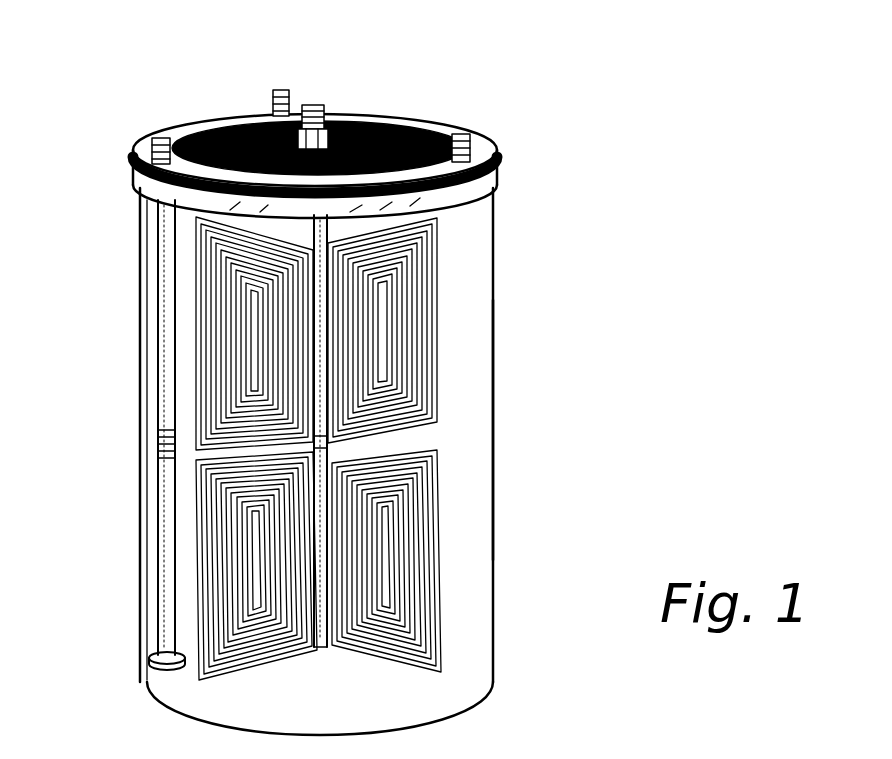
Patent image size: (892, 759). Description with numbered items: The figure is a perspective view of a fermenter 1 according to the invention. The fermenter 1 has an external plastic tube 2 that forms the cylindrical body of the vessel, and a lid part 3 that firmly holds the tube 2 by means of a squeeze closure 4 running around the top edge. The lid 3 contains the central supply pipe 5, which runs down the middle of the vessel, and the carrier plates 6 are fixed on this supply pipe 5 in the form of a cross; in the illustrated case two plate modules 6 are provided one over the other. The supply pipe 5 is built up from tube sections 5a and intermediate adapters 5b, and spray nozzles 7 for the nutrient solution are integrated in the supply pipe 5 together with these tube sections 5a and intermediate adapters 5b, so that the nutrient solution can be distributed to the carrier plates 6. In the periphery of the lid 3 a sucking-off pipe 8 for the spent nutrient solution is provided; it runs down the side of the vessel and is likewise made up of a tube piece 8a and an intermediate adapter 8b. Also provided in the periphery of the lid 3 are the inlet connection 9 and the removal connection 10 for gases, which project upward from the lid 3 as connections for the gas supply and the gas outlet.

The fermenter 1 is at (470, 293).
The plastic tube 2 is at (502, 405).
The lid 3 is at (437, 125).
The squeeze closure 4 is at (505, 162).
The supply pipe 5 is at (318, 100).
The tube piece 5a is at (267, 360).
The intermediate adapter 5b is at (337, 443).
The carrier plates 6 is at (437, 327).
The spray nozzles 7 is at (333, 233).
The sucking-off pipe 8 is at (152, 140).
The tube piece 8a is at (158, 565).
The intermediate adapter 8b is at (158, 445).
The gas inlet connection 9 is at (287, 86).
The gas outlet connection 10 is at (466, 132).